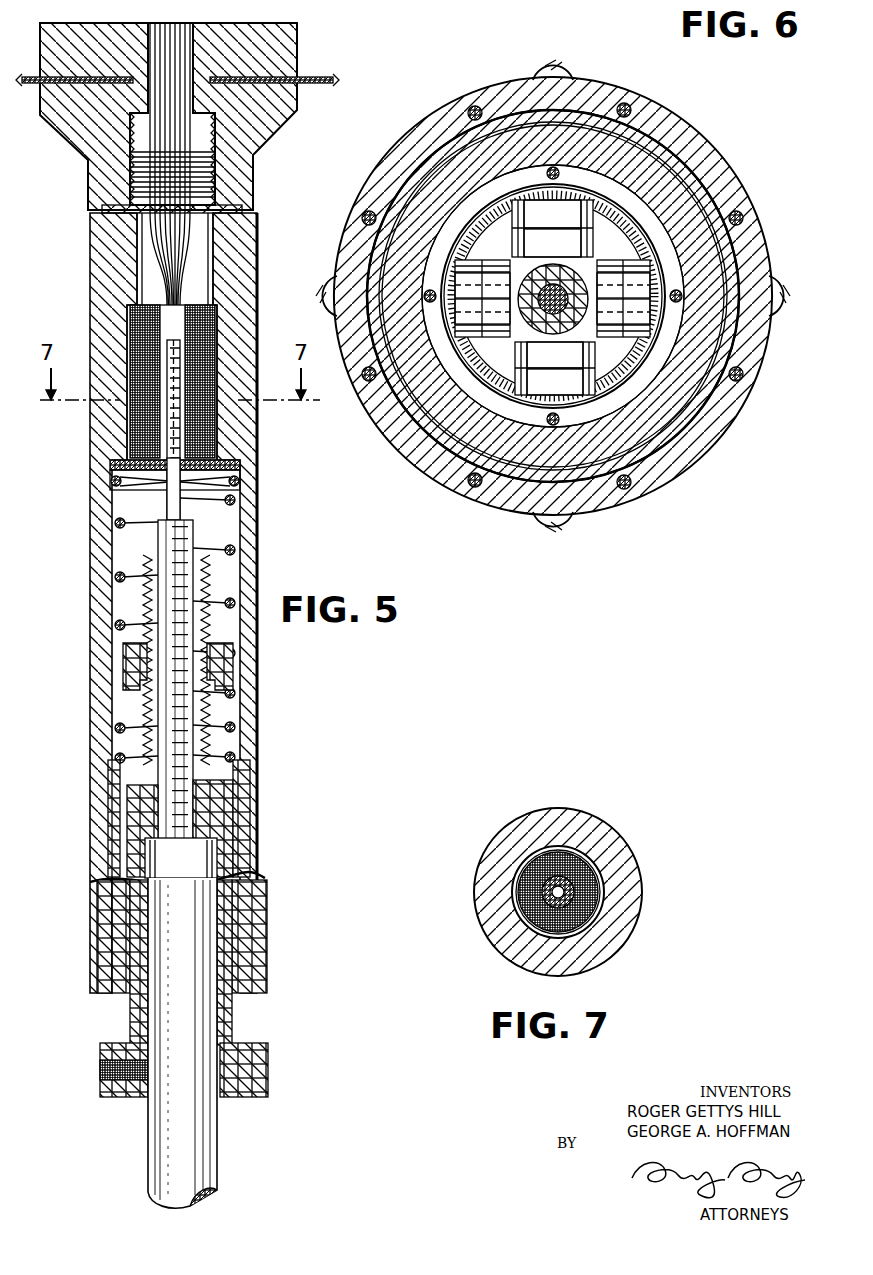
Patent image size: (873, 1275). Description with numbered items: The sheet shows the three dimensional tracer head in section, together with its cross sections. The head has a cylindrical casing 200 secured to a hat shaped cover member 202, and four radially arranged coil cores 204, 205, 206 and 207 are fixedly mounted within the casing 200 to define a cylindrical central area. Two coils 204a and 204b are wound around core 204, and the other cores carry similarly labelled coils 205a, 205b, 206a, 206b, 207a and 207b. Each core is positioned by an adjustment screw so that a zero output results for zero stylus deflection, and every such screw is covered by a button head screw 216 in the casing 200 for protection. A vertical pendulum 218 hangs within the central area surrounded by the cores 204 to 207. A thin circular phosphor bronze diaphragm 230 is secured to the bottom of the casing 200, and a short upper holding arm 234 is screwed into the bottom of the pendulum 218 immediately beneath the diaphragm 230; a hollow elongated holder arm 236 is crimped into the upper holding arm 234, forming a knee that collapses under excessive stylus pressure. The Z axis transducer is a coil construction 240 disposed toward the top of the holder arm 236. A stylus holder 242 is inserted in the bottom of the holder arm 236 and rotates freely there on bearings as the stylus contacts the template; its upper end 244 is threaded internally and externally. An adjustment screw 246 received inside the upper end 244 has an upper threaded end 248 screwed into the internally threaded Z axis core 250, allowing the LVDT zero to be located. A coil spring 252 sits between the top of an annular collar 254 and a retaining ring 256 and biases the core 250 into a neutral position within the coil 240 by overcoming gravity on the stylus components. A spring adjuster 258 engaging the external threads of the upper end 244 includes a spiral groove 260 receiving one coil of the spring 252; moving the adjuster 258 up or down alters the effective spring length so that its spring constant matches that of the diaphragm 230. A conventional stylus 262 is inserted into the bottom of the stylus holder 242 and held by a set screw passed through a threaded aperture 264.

In FIG. 6, the cylindrical casing 200 is at (705, 152).
In FIG. 6, the hat shaped cover member 202 is at (556, 430).
In FIG. 6, the coil core 204 is at (397, 274).
In FIG. 6, the coil 204a is at (470, 322).
In FIG. 6, the coil 204b is at (503, 275).
In FIG. 6, the coil core 205 is at (530, 367).
In FIG. 6, the coil 205a is at (553, 382).
In FIG. 6, the coil 205b is at (553, 355).
In FIG. 6, the coil core 206 is at (708, 287).
In FIG. 6, the coil 206a is at (650, 325).
In FIG. 6, the coil 206b is at (613, 268).
In FIG. 6, the coil core 207 is at (575, 231).
In FIG. 6, the coil 207a is at (551, 214).
In FIG. 6, the coil 207b is at (595, 262).
In FIG. 6, the button head screw 216 is at (543, 62).
In FIG. 5, the vertical pendulum 218 is at (286, 53).
In FIG. 5, the phosphor bronze diaphragm 230 is at (327, 86).
In FIG. 5, the upper holding arm 234 is at (250, 128).
In FIG. 5, the elongated holder arm 236 is at (244, 253).
In FIG. 7, the elongated holder arm 236 is at (600, 952).
In FIG. 5, the coil construction 240 is at (205, 320).
In FIG. 7, the coil construction 240 is at (588, 920).
In FIG. 5, the stylus holder 242 is at (225, 1018).
In FIG. 5, the upper end of stylus holder 244 is at (200, 715).
In FIG. 5, the adjustment screw 246 is at (195, 533).
In FIG. 5, the upper threaded end 248 is at (185, 443).
In FIG. 7, the upper threaded end 248 is at (567, 886).
In FIG. 5, the Z axis core 250 is at (165, 418).
In FIG. 7, the Z axis core 250 is at (573, 893).
In FIG. 5, the coil spring 252 is at (232, 757).
In FIG. 5, the annular collar 254 is at (243, 830).
In FIG. 5, the retaining ring 256 is at (232, 483).
In FIG. 5, the spring adjuster 258 is at (233, 672).
In FIG. 5, the spiral groove 260 is at (125, 679).
In FIG. 5, the stylus 262 is at (196, 1151).
In FIG. 5, the threaded aperture 264 is at (108, 1078).